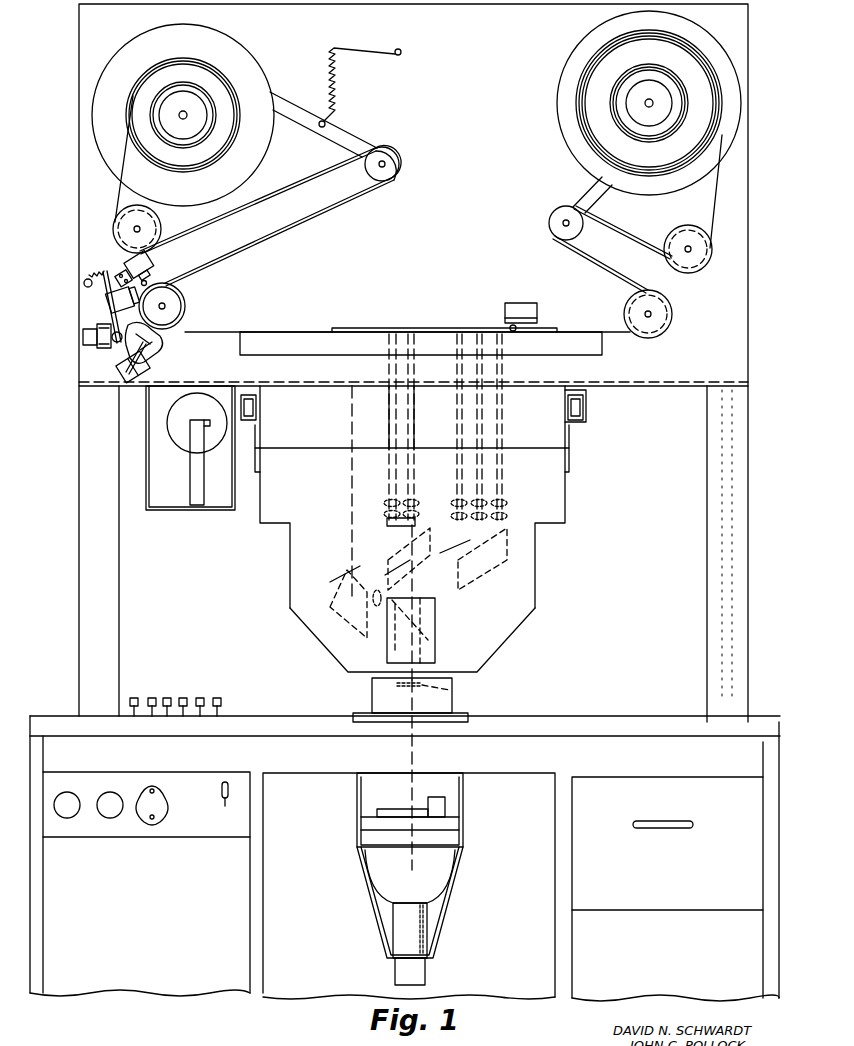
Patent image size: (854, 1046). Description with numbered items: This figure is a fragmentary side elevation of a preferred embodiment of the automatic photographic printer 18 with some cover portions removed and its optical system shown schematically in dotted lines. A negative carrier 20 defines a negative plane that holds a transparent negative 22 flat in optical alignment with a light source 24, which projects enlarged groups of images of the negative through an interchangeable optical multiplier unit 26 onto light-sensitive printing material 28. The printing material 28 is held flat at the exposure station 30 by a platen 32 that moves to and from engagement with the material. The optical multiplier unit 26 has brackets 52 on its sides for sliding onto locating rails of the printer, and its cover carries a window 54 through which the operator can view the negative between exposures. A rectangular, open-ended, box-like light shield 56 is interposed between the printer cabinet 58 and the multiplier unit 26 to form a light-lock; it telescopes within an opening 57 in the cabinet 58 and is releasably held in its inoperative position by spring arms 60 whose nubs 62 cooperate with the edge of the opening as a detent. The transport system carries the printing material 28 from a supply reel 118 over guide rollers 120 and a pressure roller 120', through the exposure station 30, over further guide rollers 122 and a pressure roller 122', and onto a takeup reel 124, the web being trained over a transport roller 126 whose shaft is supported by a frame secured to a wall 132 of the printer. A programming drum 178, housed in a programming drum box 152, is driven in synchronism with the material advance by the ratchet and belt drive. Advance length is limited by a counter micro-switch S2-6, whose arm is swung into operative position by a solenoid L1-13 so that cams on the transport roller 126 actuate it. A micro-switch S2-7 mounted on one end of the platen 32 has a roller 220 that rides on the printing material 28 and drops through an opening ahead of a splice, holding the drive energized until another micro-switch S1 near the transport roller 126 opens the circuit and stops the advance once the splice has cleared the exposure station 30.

The automatic photographic printer 18 is at (74, 552).
The negative carrier 20 is at (383, 691).
The negative 22 is at (437, 692).
The light source 24 is at (442, 872).
The optical multiplier unit 26 is at (528, 592).
The printing material 28 is at (227, 327).
The exposure station 30 is at (394, 326).
The platen 32 is at (447, 328).
The bracket 52 is at (586, 410).
The window 54 is at (433, 626).
The light shield 56 is at (545, 440).
The opening 57 is at (255, 389).
The printer cabinet 58 is at (723, 377).
The spring arms 60 is at (262, 441).
The nub 62 is at (262, 402).
The supply reel 118 is at (633, 82).
The guide rollers 120 is at (637, 236).
The pressure roller 120' is at (570, 208).
The guide rollers 122 is at (288, 167).
The pressure roller 122' is at (98, 184).
The takeup reel 124 is at (185, 95).
The transport roller 126 is at (170, 302).
The wall 132 is at (440, 253).
The programming drum box 152 is at (185, 500).
The programming drum 178 is at (180, 440).
The roller 220 is at (516, 330).
The micro-switch S1 is at (143, 263).
The counter micro-switch S2-6 is at (114, 301).
The micro-switch S2-7 is at (522, 304).
The solenoid L1-13 is at (92, 337).